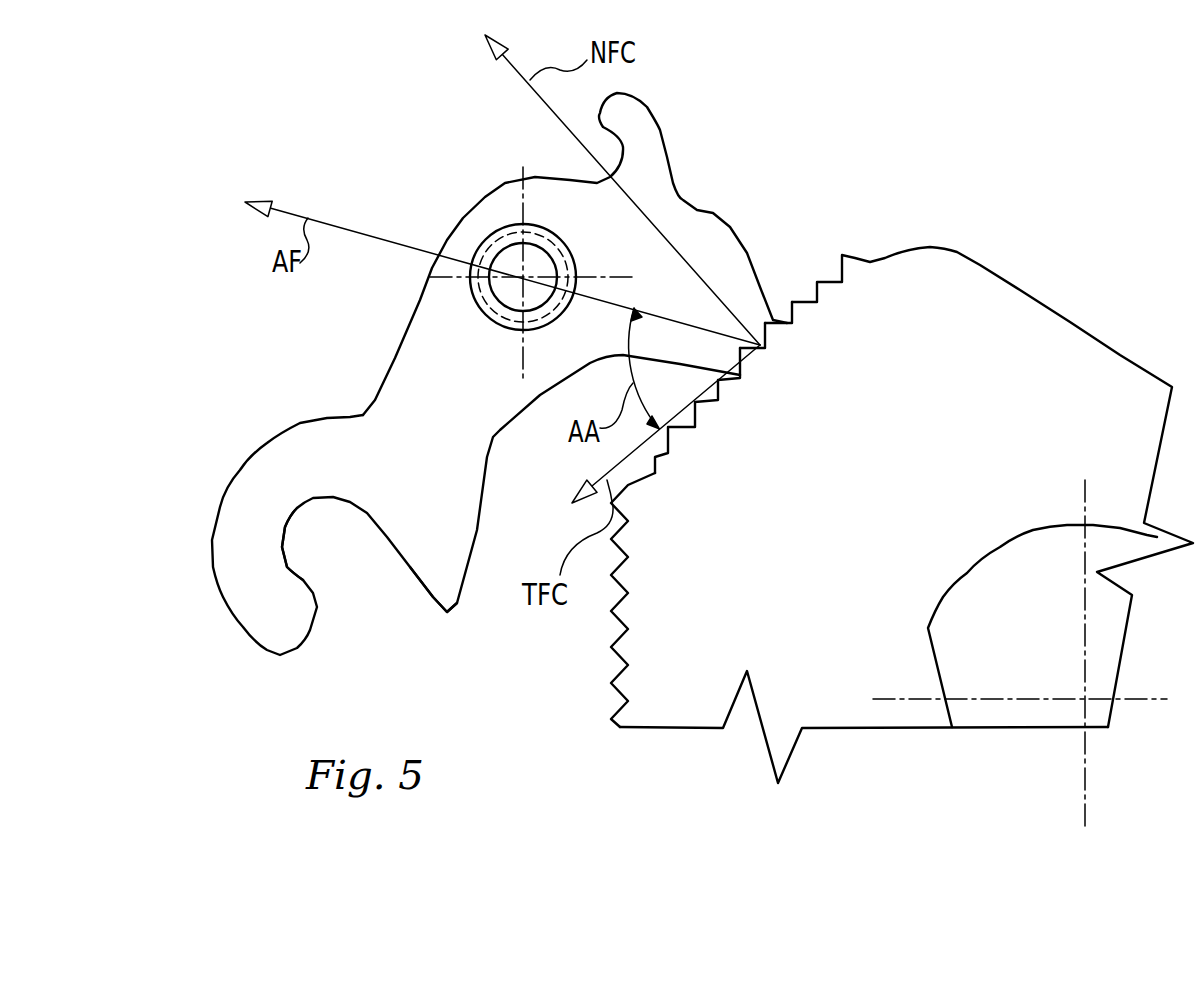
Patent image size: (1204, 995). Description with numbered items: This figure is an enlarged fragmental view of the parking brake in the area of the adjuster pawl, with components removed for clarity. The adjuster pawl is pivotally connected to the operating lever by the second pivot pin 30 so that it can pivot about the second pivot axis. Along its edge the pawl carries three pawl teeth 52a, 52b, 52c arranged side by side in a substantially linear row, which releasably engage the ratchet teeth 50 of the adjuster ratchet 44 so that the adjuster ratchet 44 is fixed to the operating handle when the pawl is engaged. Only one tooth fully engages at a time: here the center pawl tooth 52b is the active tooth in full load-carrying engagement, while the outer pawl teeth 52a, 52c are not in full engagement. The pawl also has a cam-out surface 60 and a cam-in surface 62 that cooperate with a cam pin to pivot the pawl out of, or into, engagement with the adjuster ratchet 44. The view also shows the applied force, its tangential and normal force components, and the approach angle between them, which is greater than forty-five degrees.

The second pivot pin 30 is at (503, 248).
The adjuster ratchet 44 is at (385, 367).
The ratchet teeth 50 is at (612, 690).
The pawl tooth 52a is at (722, 378).
The pawl tooth 52b is at (762, 350).
The pawl tooth 52c is at (773, 330).
The cam-out surface 60 is at (413, 580).
The cam-in surface 62 is at (303, 578).